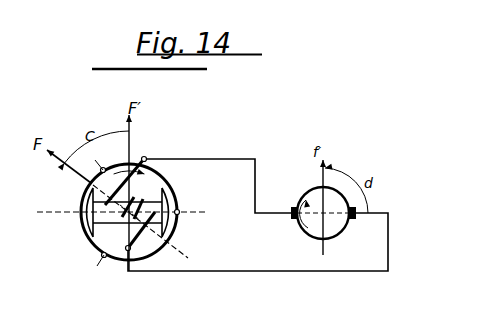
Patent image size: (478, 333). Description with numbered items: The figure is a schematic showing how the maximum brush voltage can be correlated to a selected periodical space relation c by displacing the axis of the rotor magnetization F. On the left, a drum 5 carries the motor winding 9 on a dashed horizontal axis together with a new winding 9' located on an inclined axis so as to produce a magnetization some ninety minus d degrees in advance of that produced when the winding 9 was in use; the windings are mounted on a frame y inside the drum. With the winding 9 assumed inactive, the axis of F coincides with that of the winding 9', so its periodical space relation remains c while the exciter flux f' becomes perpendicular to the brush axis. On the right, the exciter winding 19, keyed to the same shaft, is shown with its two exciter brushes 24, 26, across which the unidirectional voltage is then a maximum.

The rotatable drum / commutator 5 is at (179, 194).
The motor winding 9 is at (112, 218).
The new winding 9' is at (156, 214).
The frame with brackets y is at (89, 233).
The exciter winding 19 is at (299, 233).
The exciter brush 24 is at (359, 223).
The exciter brush 26 is at (286, 206).